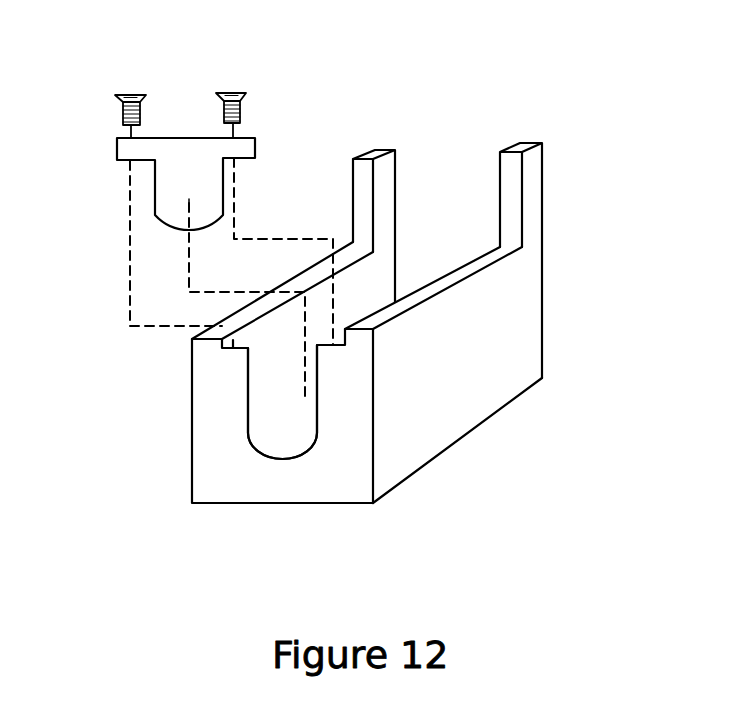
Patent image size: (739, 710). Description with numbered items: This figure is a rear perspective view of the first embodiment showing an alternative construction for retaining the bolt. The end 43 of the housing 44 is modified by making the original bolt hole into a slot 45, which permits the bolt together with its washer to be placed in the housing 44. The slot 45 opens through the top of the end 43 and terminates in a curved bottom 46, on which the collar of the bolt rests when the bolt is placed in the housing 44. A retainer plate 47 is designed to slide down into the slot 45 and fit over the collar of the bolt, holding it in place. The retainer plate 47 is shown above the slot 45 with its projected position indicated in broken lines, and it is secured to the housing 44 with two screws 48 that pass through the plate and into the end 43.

The end 43 is at (280, 488).
The housing 44 is at (480, 393).
The slot 45 is at (260, 420).
The curved bottom 46 is at (293, 448).
The retainer plate 47 is at (182, 137).
The screws 48 is at (110, 90).